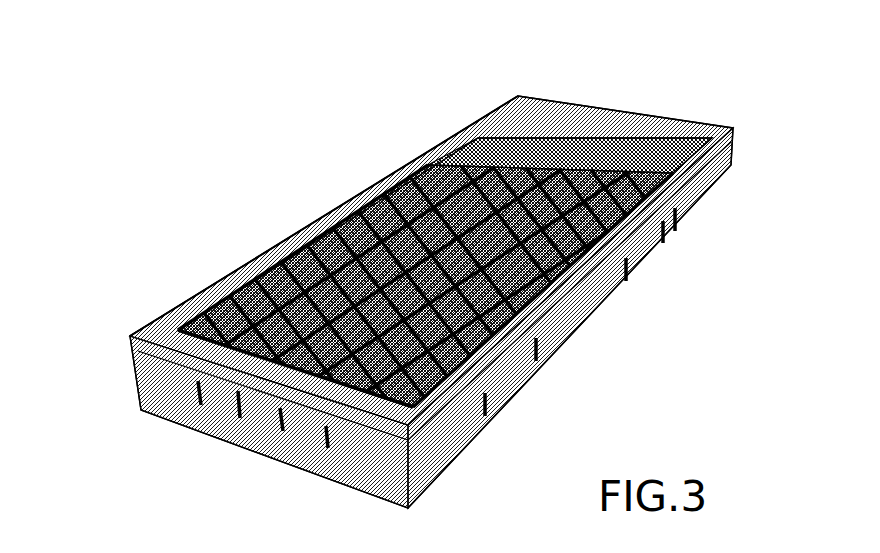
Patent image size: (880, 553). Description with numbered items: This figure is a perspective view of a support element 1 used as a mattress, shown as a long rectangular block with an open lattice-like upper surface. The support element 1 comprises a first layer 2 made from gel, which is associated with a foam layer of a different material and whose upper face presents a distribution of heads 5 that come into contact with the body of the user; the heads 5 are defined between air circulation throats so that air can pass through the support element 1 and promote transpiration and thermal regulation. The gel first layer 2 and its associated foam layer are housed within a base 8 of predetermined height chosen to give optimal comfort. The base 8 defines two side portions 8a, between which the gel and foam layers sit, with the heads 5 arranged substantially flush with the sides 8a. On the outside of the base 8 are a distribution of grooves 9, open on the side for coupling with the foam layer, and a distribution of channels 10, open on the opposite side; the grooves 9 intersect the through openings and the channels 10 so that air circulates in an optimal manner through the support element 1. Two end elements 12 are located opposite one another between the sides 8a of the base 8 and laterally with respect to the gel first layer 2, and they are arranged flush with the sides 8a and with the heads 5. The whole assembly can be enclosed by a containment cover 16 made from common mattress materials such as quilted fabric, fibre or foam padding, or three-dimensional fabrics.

The support element 1 is at (212, 148).
The first layer 2 is at (333, 193).
The heads 5 is at (222, 285).
The base 8 is at (150, 380).
The side portions 8a is at (380, 173).
The grooves 9 is at (227, 400).
The channels 10 is at (477, 410).
The end elements 12 is at (567, 97).
The containment cover 16 is at (440, 112).